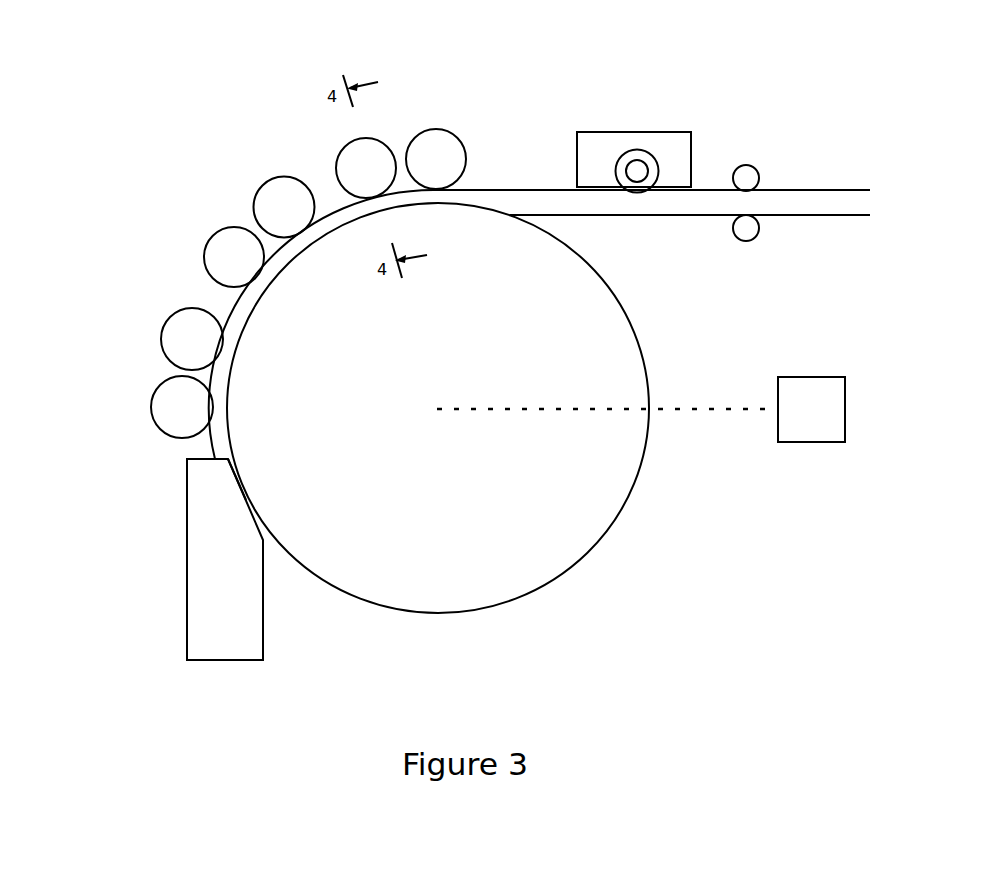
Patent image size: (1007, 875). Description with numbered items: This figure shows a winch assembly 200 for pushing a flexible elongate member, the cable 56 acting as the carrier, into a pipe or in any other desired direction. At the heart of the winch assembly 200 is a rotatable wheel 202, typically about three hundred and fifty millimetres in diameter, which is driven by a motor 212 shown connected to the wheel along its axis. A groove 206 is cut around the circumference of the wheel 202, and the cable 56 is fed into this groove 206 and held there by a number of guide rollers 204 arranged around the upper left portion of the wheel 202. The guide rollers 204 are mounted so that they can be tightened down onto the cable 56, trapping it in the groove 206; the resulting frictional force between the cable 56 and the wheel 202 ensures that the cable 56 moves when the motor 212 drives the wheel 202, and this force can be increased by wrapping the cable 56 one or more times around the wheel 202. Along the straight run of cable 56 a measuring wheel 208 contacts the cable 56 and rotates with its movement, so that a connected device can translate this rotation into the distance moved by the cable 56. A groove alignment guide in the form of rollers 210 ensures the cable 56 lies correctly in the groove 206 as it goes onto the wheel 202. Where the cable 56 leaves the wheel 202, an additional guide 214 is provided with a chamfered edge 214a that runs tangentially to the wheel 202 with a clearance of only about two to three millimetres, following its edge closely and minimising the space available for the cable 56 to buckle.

The cable 56 is at (847, 188).
The winch assembly 200 is at (248, 271).
The rotatable wheel 202 is at (585, 558).
The guide rollers 204 is at (255, 197).
The groove 206 is at (600, 302).
The measuring wheel 208 is at (637, 150).
The rollers 210 is at (745, 165).
The motor 212 is at (812, 443).
The additional guide 214 is at (187, 613).
The chamfered edge 214a is at (230, 469).